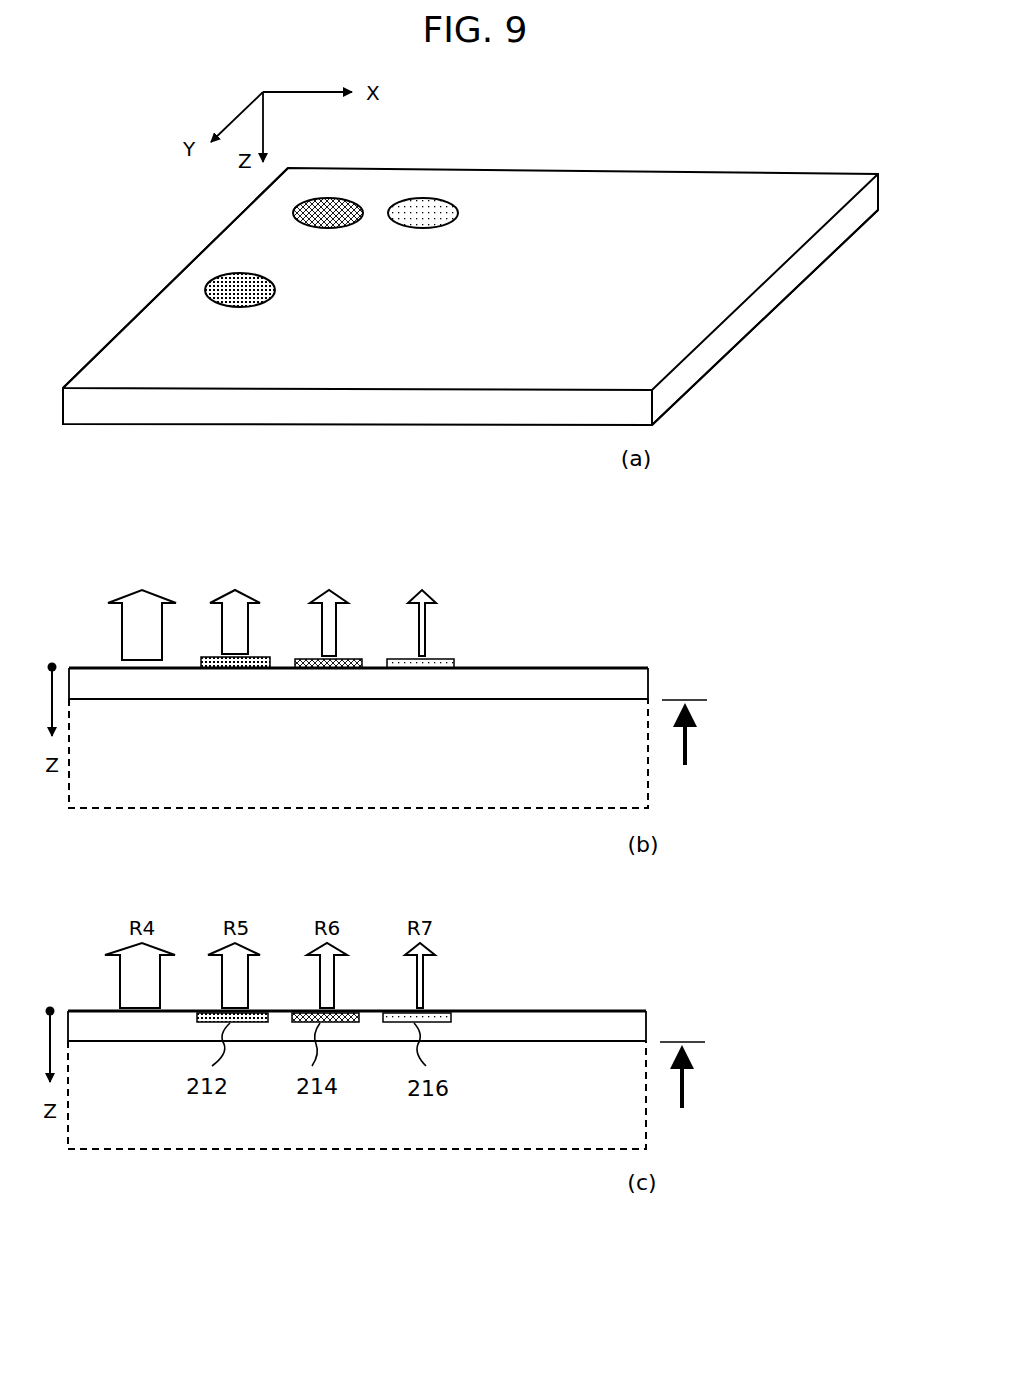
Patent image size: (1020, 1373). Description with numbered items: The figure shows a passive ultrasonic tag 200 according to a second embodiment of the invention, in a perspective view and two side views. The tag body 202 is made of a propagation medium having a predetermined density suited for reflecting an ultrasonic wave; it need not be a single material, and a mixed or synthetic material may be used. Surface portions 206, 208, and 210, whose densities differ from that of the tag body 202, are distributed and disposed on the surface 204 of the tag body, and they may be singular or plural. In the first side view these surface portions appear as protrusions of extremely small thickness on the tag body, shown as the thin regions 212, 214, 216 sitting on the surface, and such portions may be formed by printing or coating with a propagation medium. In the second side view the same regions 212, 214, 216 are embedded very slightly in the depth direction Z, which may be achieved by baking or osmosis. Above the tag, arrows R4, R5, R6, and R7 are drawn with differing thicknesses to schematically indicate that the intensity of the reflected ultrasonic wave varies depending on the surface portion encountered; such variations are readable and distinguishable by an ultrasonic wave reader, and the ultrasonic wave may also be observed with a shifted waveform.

The passive ultrasonic tag 200 is at (810, 155).
The tag body 202 is at (704, 362).
The surface 204 is at (562, 278).
The surface portion 206 is at (326, 206).
The surface portion 208 is at (426, 210).
The surface portion 210 is at (206, 287).
The first mark region 212 is at (232, 669).
The second mark region 214 is at (322, 669).
The third mark region 216 is at (416, 669).
The arrow R4 is at (142, 611).
The arrow R5 is at (235, 608).
The arrow R6 is at (329, 609).
The arrow R7 is at (422, 609).